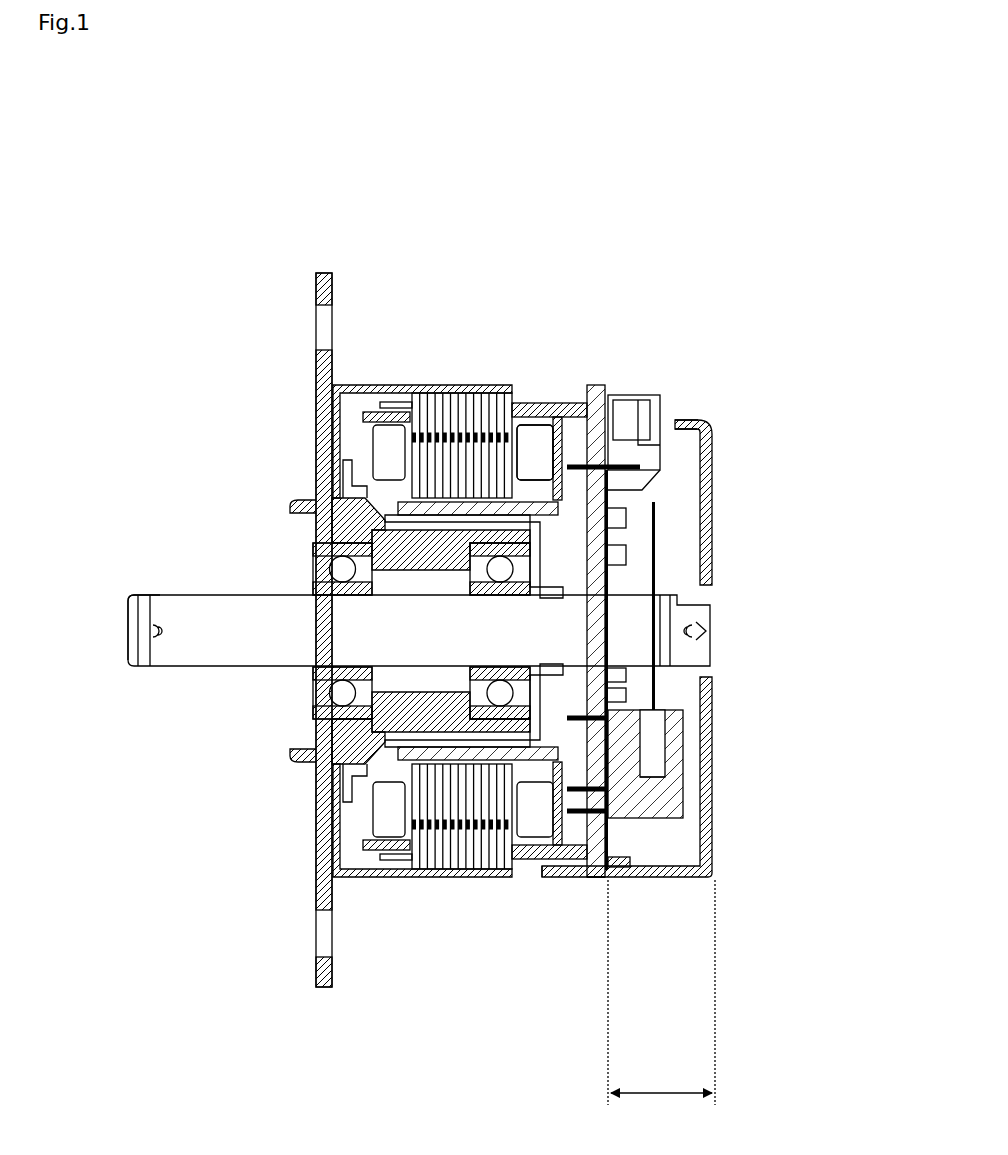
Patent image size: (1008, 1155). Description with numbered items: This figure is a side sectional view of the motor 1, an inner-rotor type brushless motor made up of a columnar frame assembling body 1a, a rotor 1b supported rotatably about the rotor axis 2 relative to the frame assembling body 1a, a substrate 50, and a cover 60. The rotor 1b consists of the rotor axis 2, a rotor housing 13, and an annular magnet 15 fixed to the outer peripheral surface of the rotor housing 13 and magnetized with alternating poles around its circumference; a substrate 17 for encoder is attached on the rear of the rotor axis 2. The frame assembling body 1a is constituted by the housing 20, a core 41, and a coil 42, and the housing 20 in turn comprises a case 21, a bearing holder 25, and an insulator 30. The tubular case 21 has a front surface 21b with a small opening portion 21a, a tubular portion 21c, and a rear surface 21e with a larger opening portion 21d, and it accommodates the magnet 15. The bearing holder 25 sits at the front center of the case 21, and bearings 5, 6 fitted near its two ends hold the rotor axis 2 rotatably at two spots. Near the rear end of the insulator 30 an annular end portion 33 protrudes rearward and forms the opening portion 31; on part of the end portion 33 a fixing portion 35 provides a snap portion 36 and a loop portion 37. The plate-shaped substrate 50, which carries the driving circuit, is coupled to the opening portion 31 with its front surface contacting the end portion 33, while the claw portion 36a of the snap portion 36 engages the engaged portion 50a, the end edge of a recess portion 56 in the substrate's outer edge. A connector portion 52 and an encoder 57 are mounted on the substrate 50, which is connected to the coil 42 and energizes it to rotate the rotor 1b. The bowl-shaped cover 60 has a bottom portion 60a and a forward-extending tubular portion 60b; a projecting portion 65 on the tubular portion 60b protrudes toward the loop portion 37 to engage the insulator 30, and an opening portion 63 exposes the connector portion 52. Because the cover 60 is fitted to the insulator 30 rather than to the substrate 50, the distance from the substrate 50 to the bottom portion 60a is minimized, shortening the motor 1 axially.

The motor 1 is at (141, 152).
The frame assembling body 1a is at (384, 551).
The rotor 1b is at (150, 687).
The rotor axis 2 is at (431, 631).
The bearing 5 is at (316, 690).
The bearing 6 is at (462, 588).
The rotor housing 13 is at (563, 548).
The magnet 15 is at (563, 509).
The substrate for encoder 17 is at (660, 722).
The housing 20 is at (523, 213).
The case 21 is at (428, 381).
The opening portion 21a is at (320, 505).
The front surface 21b is at (322, 418).
The tubular portion 21c is at (346, 383).
The opening portion 21d is at (500, 383).
The rear surface 21e is at (513, 386).
The bearing holder 25 is at (385, 384).
The insulator 30 is at (556, 392).
The opening portion 31 is at (676, 668).
The end portion 33 is at (566, 402).
The fixing portion 35 is at (745, 810).
The snap portion 36 is at (710, 769).
The claw portion 36a is at (685, 820).
The loop portion 37 is at (703, 875).
The core 41 is at (425, 878).
The coil 42 is at (390, 805).
The substrate 50 is at (640, 627).
The engaged portion 50a is at (550, 966).
The connector portion 52 is at (636, 395).
The recess portion 56 is at (550, 966).
The encoder 57 is at (672, 728).
The cover 60 is at (637, 668).
The bottom portion 60a is at (740, 455).
The tubular portion 60b is at (545, 880).
The opening portion 63 is at (684, 420).
The projecting portion 65 is at (602, 878).